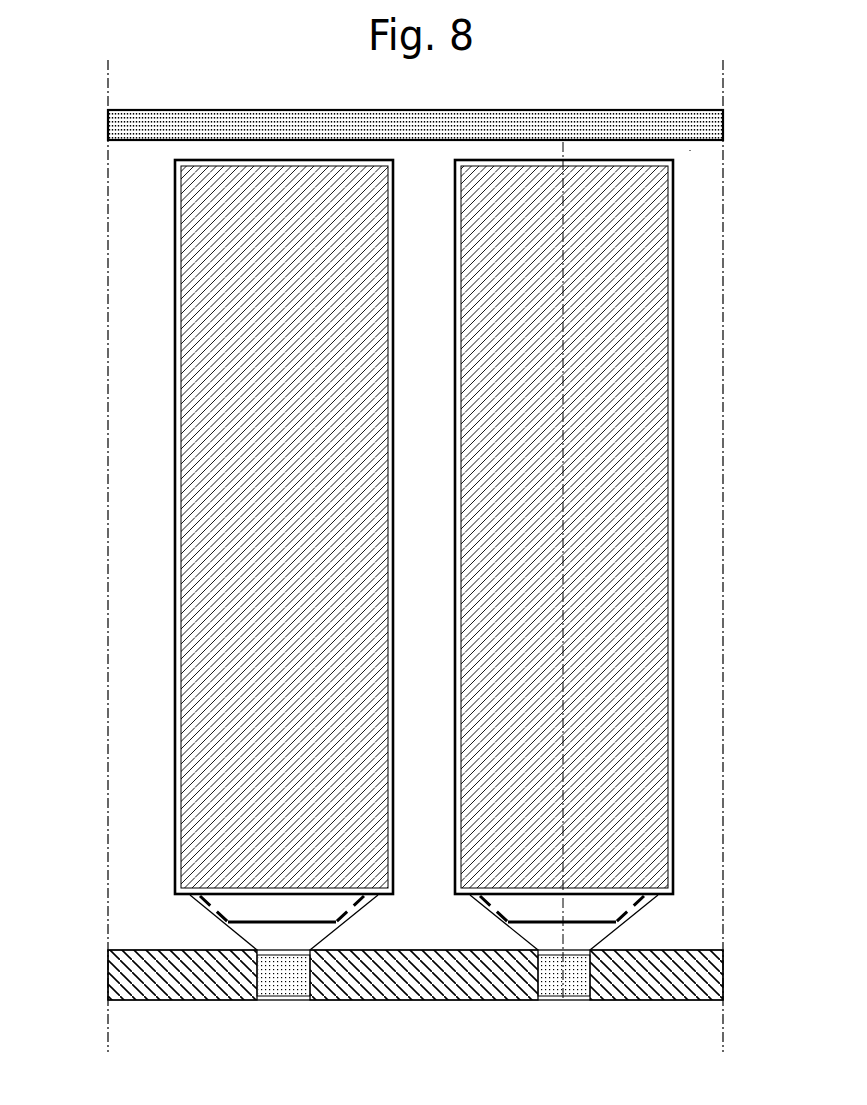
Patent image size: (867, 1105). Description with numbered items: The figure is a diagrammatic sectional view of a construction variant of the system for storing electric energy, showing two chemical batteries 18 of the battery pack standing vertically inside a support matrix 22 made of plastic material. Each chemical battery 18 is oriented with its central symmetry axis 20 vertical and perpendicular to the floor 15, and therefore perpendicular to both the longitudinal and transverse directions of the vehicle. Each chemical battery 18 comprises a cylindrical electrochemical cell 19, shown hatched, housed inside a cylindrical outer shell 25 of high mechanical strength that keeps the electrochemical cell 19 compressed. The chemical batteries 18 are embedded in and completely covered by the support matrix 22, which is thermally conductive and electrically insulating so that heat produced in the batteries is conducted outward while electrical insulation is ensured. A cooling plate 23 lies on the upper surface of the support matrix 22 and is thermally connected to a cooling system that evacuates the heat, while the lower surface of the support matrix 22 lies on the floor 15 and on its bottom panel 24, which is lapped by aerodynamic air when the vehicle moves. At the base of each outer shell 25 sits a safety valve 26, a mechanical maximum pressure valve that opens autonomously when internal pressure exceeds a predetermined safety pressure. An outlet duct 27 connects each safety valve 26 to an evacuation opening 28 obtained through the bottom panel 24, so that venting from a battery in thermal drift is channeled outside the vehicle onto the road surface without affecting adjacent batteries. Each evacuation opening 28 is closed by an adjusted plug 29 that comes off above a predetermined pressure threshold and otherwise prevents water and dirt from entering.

The floor 15 is at (98, 980).
The chemical battery 18 is at (140, 541).
The electrochemical cell 19 is at (635, 392).
The central symmetry axis 20 is at (565, 148).
The support matrix 22 is at (705, 180).
The cooling plate 23 is at (609, 130).
The bottom panel 24 is at (705, 973).
The outer shell 25 is at (675, 265).
The safety valve 26 is at (632, 920).
The outlet duct 27 is at (522, 935).
The evacuation opening 28 is at (580, 999).
The adjusted plug 29 is at (551, 980).